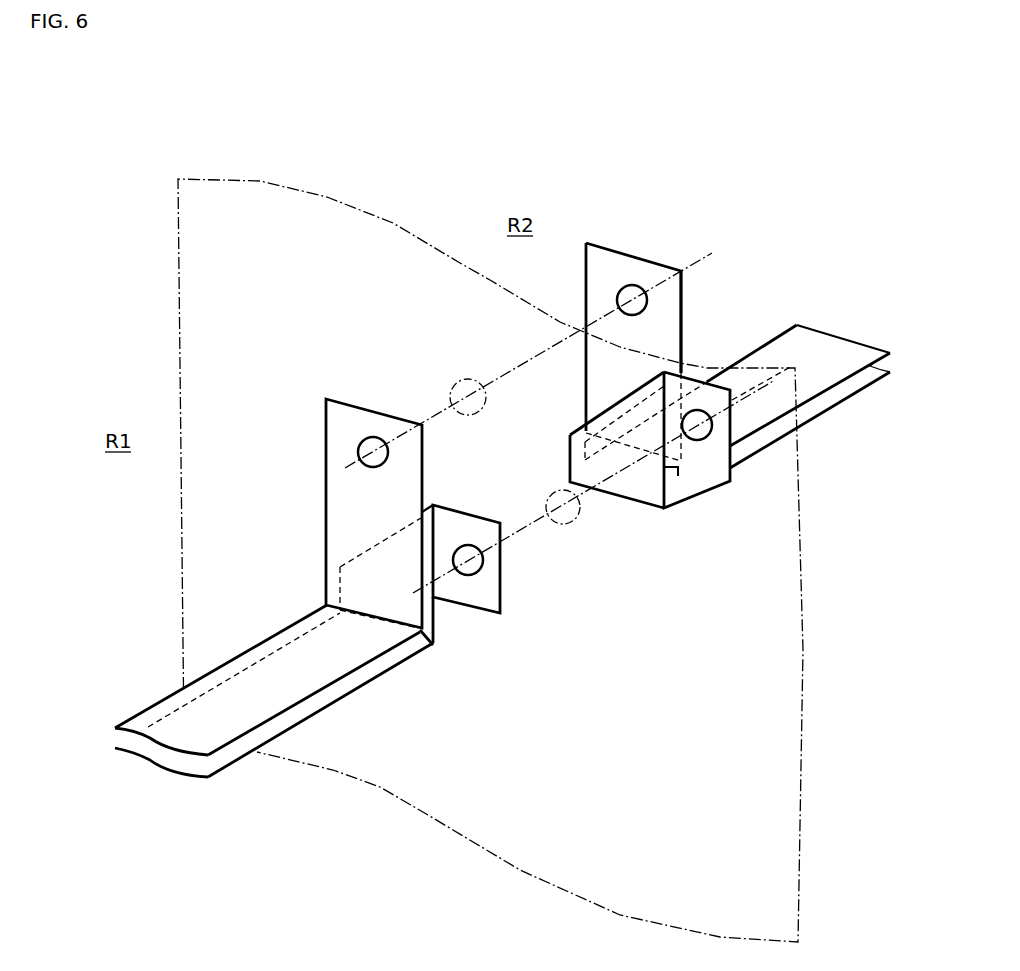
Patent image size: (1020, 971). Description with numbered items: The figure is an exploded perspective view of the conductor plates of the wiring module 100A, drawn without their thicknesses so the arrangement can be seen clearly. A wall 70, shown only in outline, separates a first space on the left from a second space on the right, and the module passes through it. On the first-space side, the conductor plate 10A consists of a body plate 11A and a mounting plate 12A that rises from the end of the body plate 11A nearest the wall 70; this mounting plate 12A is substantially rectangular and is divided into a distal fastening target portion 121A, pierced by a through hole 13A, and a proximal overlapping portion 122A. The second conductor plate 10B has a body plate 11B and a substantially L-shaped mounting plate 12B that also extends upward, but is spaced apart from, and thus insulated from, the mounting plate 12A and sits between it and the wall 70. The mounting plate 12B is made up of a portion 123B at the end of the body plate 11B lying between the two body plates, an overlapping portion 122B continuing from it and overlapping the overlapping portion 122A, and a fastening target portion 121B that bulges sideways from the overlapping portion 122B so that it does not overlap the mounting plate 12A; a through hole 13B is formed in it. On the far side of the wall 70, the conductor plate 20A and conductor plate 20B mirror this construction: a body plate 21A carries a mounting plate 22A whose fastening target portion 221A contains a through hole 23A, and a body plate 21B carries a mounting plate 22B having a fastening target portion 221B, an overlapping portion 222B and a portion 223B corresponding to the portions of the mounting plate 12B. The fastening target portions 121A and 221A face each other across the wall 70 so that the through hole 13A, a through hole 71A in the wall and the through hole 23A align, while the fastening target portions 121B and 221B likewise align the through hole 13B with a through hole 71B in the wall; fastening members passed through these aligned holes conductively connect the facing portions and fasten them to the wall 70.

The wiring module 100A is at (781, 162).
The wall 70 is at (332, 227).
The through hole 71A is at (453, 383).
The through hole 71B is at (553, 490).
The conductor plate 10A is at (274, 557).
The body plate 11A is at (248, 657).
The mounting plate 12A is at (316, 493).
The fastening target portion 121A is at (375, 488).
The overlapping portion 122A is at (363, 566).
The through hole 13A is at (363, 438).
The conductor plate 10B is at (356, 648).
The body plate 11B is at (337, 695).
The mounting plate 12B is at (506, 584).
The fastening target portion 121B is at (473, 585).
The overlapping portion 122B is at (428, 612).
The portion 123B is at (415, 647).
The through hole 13B is at (460, 547).
The conductor plate 20A is at (737, 330).
The body plate 21A is at (833, 337).
The mounting plate 22A is at (647, 272).
The fastening target portion 221A is at (668, 291).
The through hole 23A is at (628, 288).
The conductor plate 20B is at (730, 480).
The body plate 21B is at (850, 398).
The mounting plate 22B is at (677, 483).
The fastening target portion 221B is at (690, 477).
The overlapping portion 222B is at (617, 450).
The portion 223B is at (631, 512).